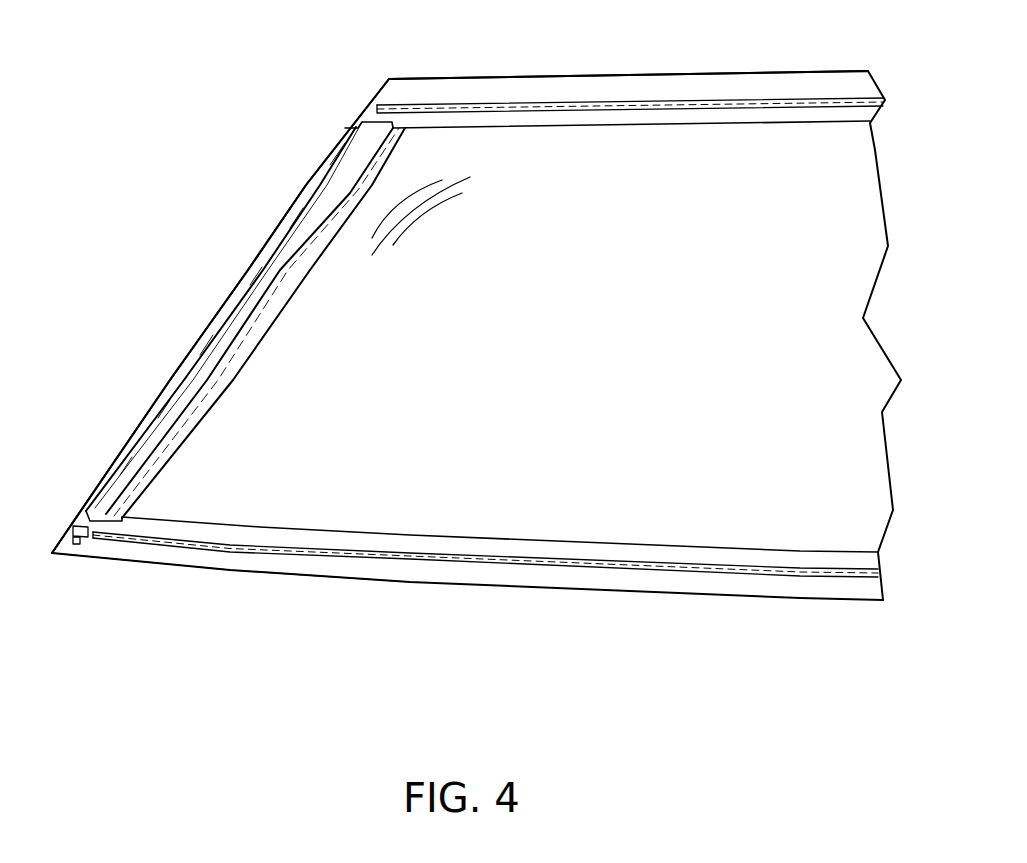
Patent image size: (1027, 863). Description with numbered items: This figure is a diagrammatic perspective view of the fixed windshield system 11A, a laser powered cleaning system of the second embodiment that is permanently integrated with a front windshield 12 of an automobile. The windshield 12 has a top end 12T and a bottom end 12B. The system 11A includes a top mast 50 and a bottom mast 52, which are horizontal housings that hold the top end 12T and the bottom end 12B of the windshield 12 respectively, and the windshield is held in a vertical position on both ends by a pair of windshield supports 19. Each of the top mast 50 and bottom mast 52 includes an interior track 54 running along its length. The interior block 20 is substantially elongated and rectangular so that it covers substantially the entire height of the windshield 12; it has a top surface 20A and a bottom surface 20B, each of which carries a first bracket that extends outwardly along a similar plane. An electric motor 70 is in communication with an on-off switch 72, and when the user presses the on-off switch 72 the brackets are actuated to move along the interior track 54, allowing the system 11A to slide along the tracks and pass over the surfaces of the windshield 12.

The fixed windshield system 11A is at (86, 646).
The windshield 12 is at (718, 480).
The top end of the windshield 12T is at (596, 162).
The bottom end of the windshield 12B is at (543, 534).
The windshield support 19 is at (230, 300).
The interior block 20 is at (335, 172).
The top surface of the interior block 20A is at (365, 121).
The bottom surface of the interior block 20B is at (80, 519).
The top mast 50 is at (590, 82).
The bottom mast 52 is at (218, 560).
The interior track 54 is at (519, 97).
The electric motor 70 is at (73, 527).
The on-off switch 72 is at (74, 545).